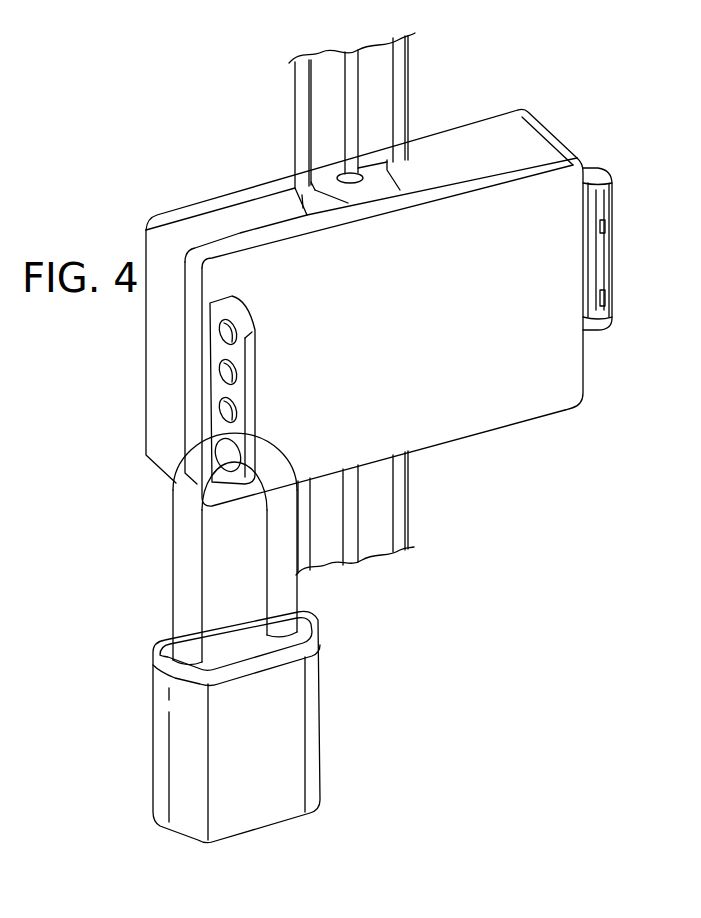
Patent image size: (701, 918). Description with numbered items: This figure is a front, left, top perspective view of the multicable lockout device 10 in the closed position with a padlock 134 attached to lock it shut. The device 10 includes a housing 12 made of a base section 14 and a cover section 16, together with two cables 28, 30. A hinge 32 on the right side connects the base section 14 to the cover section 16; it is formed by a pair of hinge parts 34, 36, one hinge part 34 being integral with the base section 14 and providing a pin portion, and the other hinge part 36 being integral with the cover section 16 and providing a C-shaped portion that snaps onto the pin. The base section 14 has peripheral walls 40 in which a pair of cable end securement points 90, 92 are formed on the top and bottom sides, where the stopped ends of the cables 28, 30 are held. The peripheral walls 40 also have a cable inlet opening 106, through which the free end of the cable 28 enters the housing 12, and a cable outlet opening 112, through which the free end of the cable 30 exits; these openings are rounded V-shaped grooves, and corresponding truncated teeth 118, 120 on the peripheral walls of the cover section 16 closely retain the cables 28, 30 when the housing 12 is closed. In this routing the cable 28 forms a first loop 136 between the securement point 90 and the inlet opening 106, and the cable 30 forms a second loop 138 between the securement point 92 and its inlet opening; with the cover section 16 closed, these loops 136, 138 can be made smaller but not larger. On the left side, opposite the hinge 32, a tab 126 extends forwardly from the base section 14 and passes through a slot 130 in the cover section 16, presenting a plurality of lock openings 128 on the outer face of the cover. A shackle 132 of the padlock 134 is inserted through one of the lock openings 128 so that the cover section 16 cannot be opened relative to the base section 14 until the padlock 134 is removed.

The multicable lockout device 10 is at (617, 87).
The housing 12 is at (500, 127).
The base section 14 is at (195, 215).
The cover section 16 is at (483, 413).
The cable 28 is at (347, 67).
The cable 30 is at (398, 100).
The hinge 32 is at (640, 167).
The hinge part 34 is at (592, 243).
The hinge part 36 is at (617, 262).
The peripheral walls 40 is at (457, 145).
The cable end securement point 90 is at (330, 177).
The cable end securement point 92 is at (368, 482).
The cable inlet opening 106 is at (293, 195).
The cable outlet opening 112 is at (407, 158).
The truncated tooth 118 is at (413, 182).
The truncated tooth 120 is at (317, 208).
The tab 126 is at (250, 410).
The lock openings 128 is at (227, 412).
The slot 130 is at (213, 328).
The shackle 132 is at (180, 578).
The padlock 134 is at (130, 733).
The first loop 136 is at (323, 92).
The second loop 138 is at (372, 515).